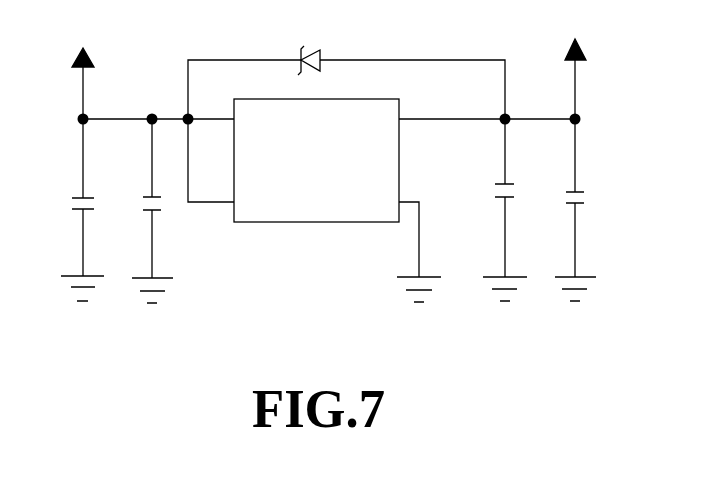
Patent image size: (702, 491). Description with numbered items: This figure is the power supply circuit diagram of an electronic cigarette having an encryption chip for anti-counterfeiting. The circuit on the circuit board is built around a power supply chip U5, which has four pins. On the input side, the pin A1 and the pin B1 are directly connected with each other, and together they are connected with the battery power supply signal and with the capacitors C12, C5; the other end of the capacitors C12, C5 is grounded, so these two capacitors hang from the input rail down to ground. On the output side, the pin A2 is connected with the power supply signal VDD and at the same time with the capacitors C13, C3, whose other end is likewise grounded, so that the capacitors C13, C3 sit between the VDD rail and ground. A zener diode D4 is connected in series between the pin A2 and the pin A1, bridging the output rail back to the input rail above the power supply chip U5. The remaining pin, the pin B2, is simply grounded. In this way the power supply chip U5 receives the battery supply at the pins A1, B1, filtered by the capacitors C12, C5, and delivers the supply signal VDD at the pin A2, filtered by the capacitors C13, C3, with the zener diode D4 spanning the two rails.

The power supply signal VDD is at (580, 71).
The zener diode D4 is at (346, 72).
The power supply chip U5 is at (314, 200).
The pin A1 is at (252, 123).
The pin A2 is at (384, 123).
The pin B1 is at (252, 203).
The pin B2 is at (384, 203).
The capacitor C12 is at (75, 210).
The capacitor C5 is at (145, 211).
The capacitor C3 is at (499, 210).
The capacitor C13 is at (567, 210).